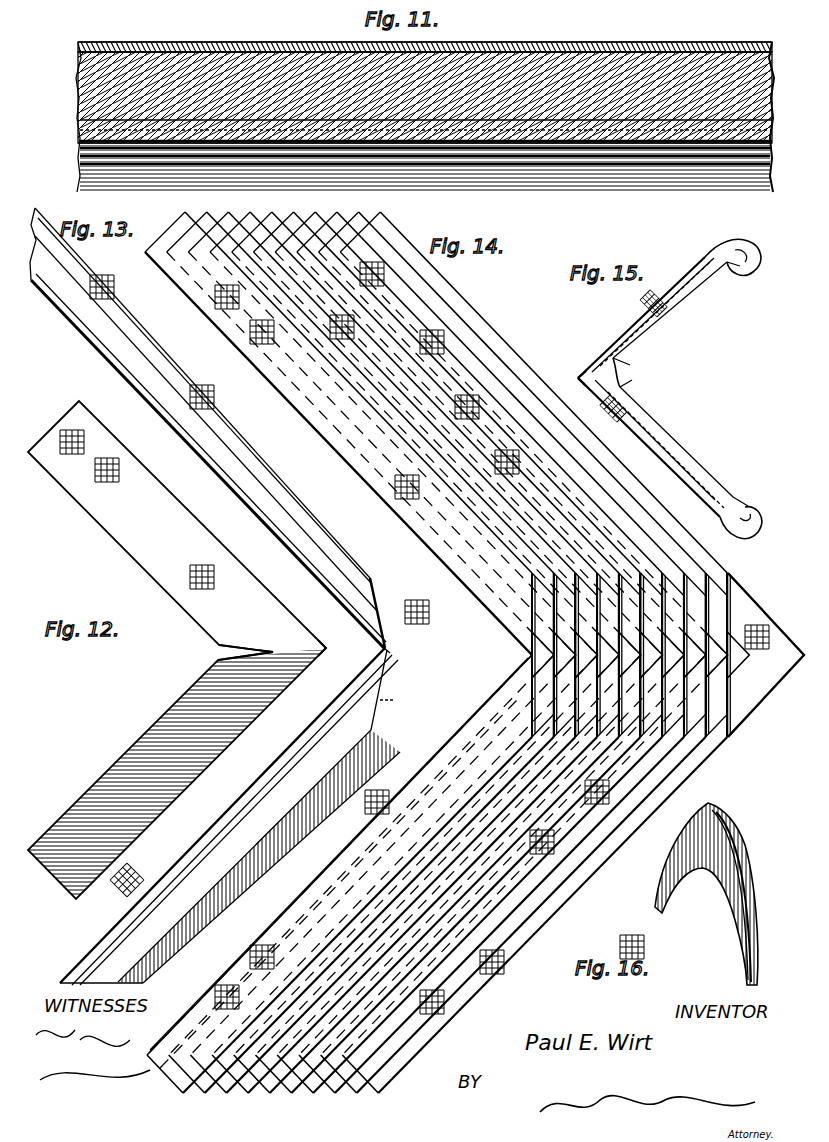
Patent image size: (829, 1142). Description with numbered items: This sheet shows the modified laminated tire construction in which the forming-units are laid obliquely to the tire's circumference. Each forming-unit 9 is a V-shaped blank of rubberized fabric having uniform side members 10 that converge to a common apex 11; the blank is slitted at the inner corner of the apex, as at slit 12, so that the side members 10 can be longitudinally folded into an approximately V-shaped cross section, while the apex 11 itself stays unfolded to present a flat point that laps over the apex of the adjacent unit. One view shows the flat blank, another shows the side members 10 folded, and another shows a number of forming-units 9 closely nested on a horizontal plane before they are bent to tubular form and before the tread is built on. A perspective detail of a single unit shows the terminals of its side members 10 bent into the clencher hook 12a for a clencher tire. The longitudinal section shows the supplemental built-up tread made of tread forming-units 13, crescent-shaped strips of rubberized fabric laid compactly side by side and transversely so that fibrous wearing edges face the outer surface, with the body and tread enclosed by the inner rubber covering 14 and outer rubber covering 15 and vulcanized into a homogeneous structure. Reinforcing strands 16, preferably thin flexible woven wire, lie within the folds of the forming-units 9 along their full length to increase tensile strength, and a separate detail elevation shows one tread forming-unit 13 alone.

In FIG. 11, the forming-unit 9 is at (485, 132).
In FIG. 13, the forming-unit 9 is at (300, 765).
In FIG. 12, the forming-unit 9 is at (140, 562).
In FIG. 14, the forming-unit 9 is at (262, 514).
In FIG. 15, the forming-unit 9 is at (662, 416).
In FIG. 13, the side member 10 is at (345, 850).
In FIG. 12, the side member 10 is at (250, 700).
In FIG. 14, the side member 10 is at (428, 526).
In FIG. 15, the side member 10 is at (674, 312).
In FIG. 11, the apex 11 is at (100, 125).
In FIG. 13, the apex 11 is at (417, 660).
In FIG. 12, the apex 11 is at (304, 654).
In FIG. 14, the apex 11 is at (766, 655).
In FIG. 15, the apex 11 is at (592, 368).
In FIG. 13, the slit 12 is at (395, 700).
In FIG. 12, the slit 12 is at (256, 650).
In FIG. 15, the slit 12 is at (628, 370).
In FIG. 15, the clencher hook 12a is at (756, 512).
In FIG. 11, the tread forming-unit 13 is at (142, 58).
In FIG. 16, the tread forming-unit 13 is at (738, 845).
In FIG. 11, the inner rubber covering 14 is at (97, 143).
In FIG. 11, the outer rubber covering 15 is at (236, 42).
In FIG. 13, the reinforcing strand 16 is at (60, 322).
In FIG. 14, the reinforcing strand 16 is at (593, 655).